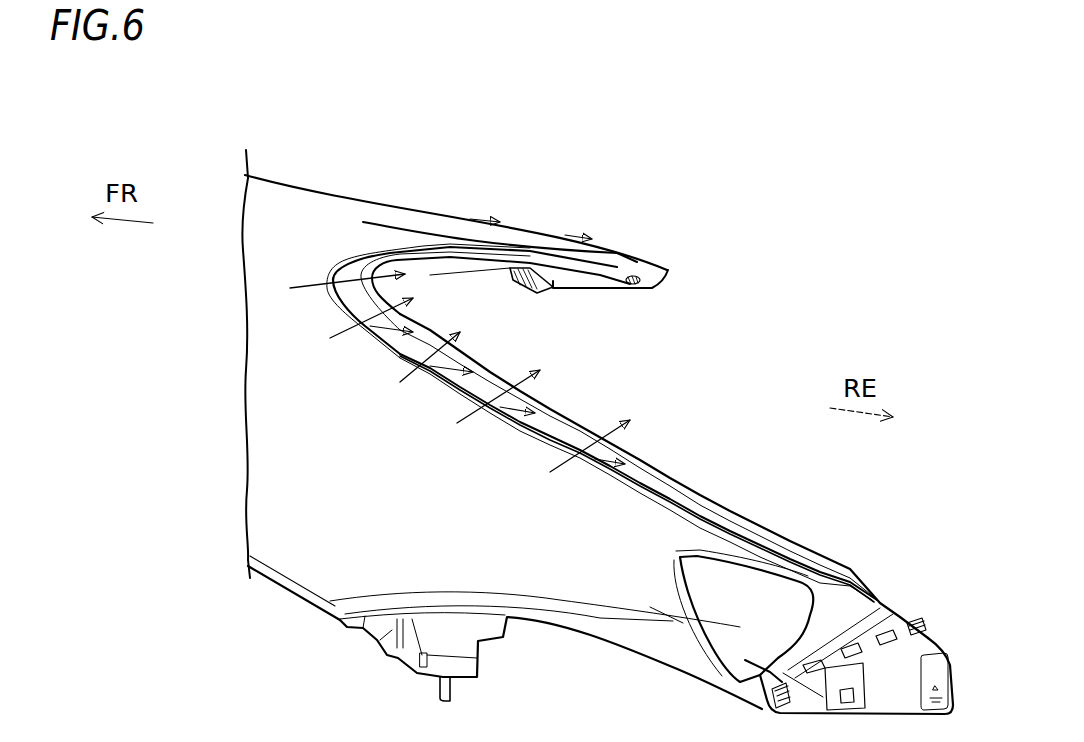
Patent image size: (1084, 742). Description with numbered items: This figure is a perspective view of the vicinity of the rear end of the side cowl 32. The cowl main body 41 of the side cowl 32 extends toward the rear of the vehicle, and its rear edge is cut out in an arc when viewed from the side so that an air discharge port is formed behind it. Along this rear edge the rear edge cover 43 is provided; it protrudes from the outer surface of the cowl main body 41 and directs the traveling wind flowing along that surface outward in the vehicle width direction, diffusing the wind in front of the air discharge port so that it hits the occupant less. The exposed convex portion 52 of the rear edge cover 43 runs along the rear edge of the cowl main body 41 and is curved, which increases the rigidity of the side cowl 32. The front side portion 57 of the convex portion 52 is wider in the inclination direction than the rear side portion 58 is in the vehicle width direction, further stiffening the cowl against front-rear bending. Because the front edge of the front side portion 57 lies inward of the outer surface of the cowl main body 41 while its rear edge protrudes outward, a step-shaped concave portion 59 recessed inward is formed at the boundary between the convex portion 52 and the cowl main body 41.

The side cowl 32 is at (398, 172).
The cowl main body 41 is at (262, 265).
The rear edge cover 43 is at (603, 407).
The convex portion 52 is at (483, 382).
The front side portion 57 is at (418, 338).
The rear side portion 58 is at (467, 268).
The step-shaped concave portion 59 is at (333, 280).